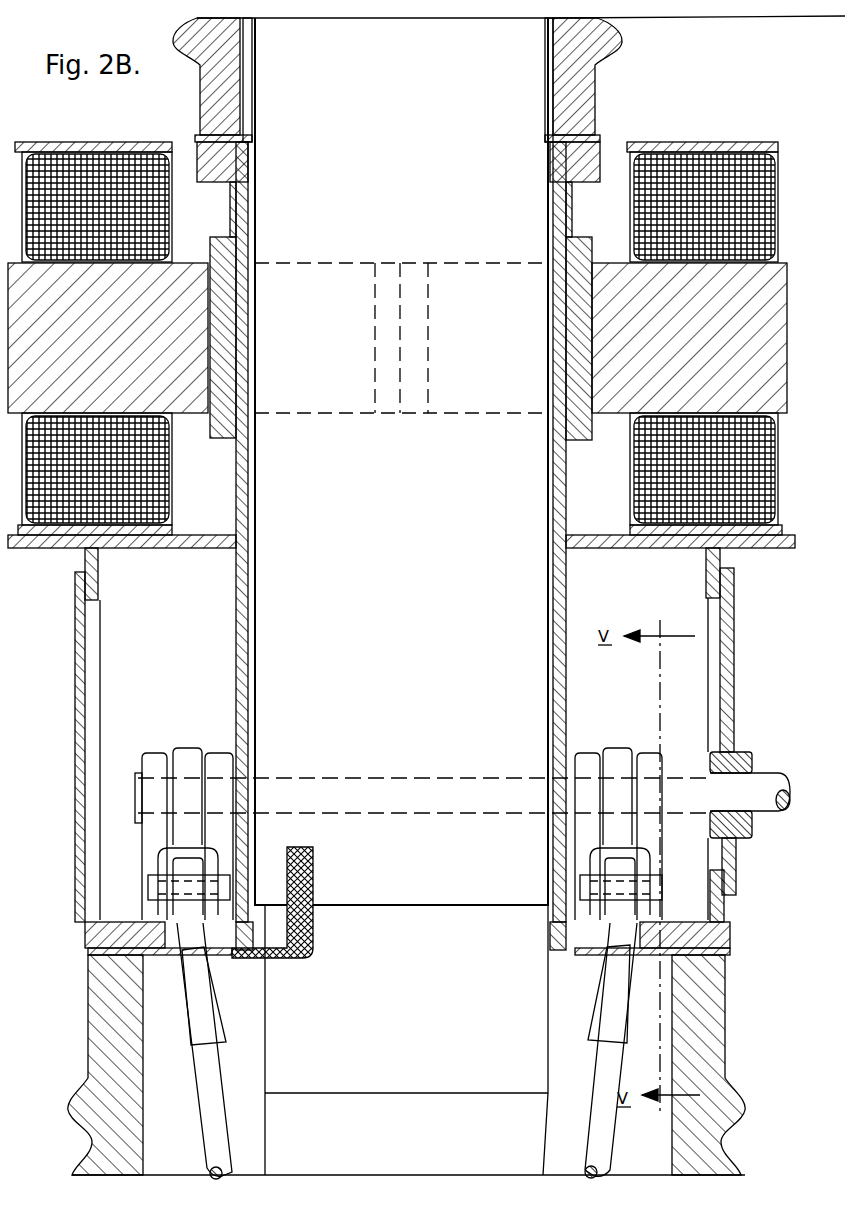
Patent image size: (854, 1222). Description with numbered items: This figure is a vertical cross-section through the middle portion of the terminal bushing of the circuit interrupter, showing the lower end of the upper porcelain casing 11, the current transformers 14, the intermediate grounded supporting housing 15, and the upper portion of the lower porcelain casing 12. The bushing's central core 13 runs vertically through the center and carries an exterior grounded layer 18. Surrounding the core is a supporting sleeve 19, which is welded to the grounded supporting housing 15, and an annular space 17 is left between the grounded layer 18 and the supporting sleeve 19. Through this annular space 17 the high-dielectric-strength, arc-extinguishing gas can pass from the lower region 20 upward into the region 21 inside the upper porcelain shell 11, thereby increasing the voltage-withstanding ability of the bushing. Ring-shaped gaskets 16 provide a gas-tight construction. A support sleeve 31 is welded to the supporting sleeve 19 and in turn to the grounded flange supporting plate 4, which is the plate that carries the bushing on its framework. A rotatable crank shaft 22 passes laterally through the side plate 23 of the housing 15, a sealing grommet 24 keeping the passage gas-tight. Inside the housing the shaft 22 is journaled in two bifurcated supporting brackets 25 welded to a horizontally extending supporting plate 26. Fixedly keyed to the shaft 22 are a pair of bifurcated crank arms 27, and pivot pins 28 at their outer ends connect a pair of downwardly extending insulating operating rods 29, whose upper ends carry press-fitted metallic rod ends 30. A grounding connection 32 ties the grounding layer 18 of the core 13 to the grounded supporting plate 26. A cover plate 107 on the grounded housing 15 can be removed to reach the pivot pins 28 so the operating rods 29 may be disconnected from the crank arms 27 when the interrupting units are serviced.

The grounded flange supporting plate 4 is at (773, 268).
The upper porcelain casing 11 is at (600, 78).
The lower porcelain casing 12 is at (742, 1101).
The central core 13 is at (542, 1065).
The current transformers 14 is at (700, 160).
The grounded supporting housing 15 is at (85, 560).
The ring-shaped gaskets 16 is at (596, 140).
The annular space 17 is at (248, 208).
The exterior grounded layer 18 is at (430, 895).
The supporting sleeve 19 is at (240, 600).
The lower region 20 is at (185, 1130).
The upper region 21 is at (246, 62).
The rotatable shaft 22 is at (767, 808).
The side plate 23 is at (734, 686).
The sealing grommet 24 is at (752, 758).
The bifurcated supporting brackets 25 is at (145, 853).
The supporting plate 26 is at (88, 932).
The bifurcated crank arms 27 is at (186, 752).
The pivot pins 28 is at (148, 888).
The operating rods 29 is at (226, 1125).
The metallic rod ends 30 is at (212, 958).
The support sleeve 31 is at (590, 250).
The grounding connection 32 is at (314, 945).
The cover plate 107 is at (76, 720).